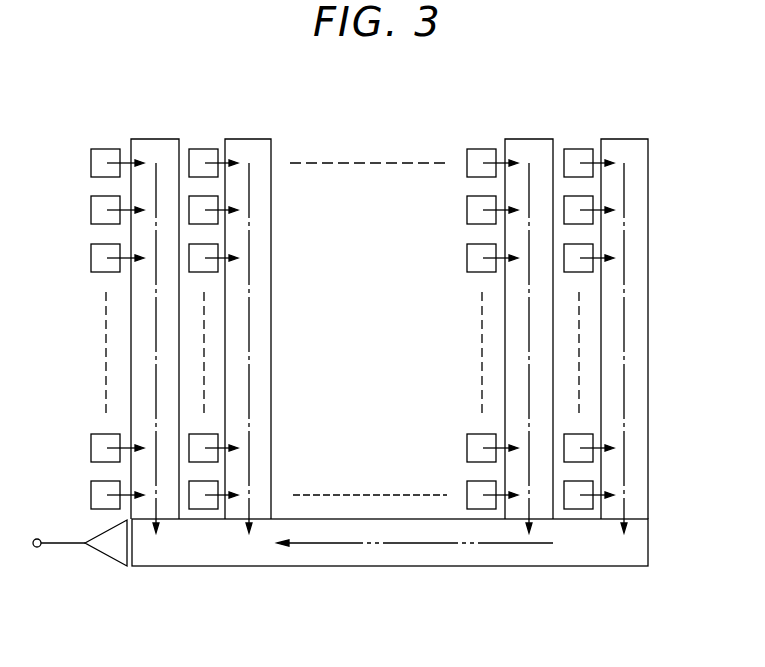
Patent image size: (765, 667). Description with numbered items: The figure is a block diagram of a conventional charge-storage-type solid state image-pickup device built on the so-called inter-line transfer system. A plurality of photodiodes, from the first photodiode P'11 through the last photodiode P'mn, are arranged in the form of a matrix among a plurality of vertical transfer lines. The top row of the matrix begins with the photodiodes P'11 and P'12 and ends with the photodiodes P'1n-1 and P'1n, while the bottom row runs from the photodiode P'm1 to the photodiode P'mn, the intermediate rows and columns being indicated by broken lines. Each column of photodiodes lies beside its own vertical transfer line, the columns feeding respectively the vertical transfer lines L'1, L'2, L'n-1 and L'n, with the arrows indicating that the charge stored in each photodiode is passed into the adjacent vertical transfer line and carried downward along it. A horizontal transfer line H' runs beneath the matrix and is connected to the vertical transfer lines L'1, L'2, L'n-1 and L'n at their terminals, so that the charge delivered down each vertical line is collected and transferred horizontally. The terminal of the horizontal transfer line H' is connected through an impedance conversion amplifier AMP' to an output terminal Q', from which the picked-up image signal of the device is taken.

The photodiode P'11 is at (117, 136).
The photodiode P'12 is at (213, 136).
The photodiode P'1n-1 is at (485, 136).
The photodiode P'1n is at (587, 136).
The photodiode P'm1 is at (91, 488).
The photodiode P'mn is at (634, 488).
The vertical transfer line L'1 is at (155, 311).
The vertical transfer line L'2 is at (248, 311).
The vertical transfer line L'n-1 is at (528, 309).
The vertical transfer line L'n is at (624, 309).
The horizontal transfer line H' is at (390, 567).
The impedance conversion amplifier AMP' is at (109, 566).
The output terminal Q' is at (55, 564).